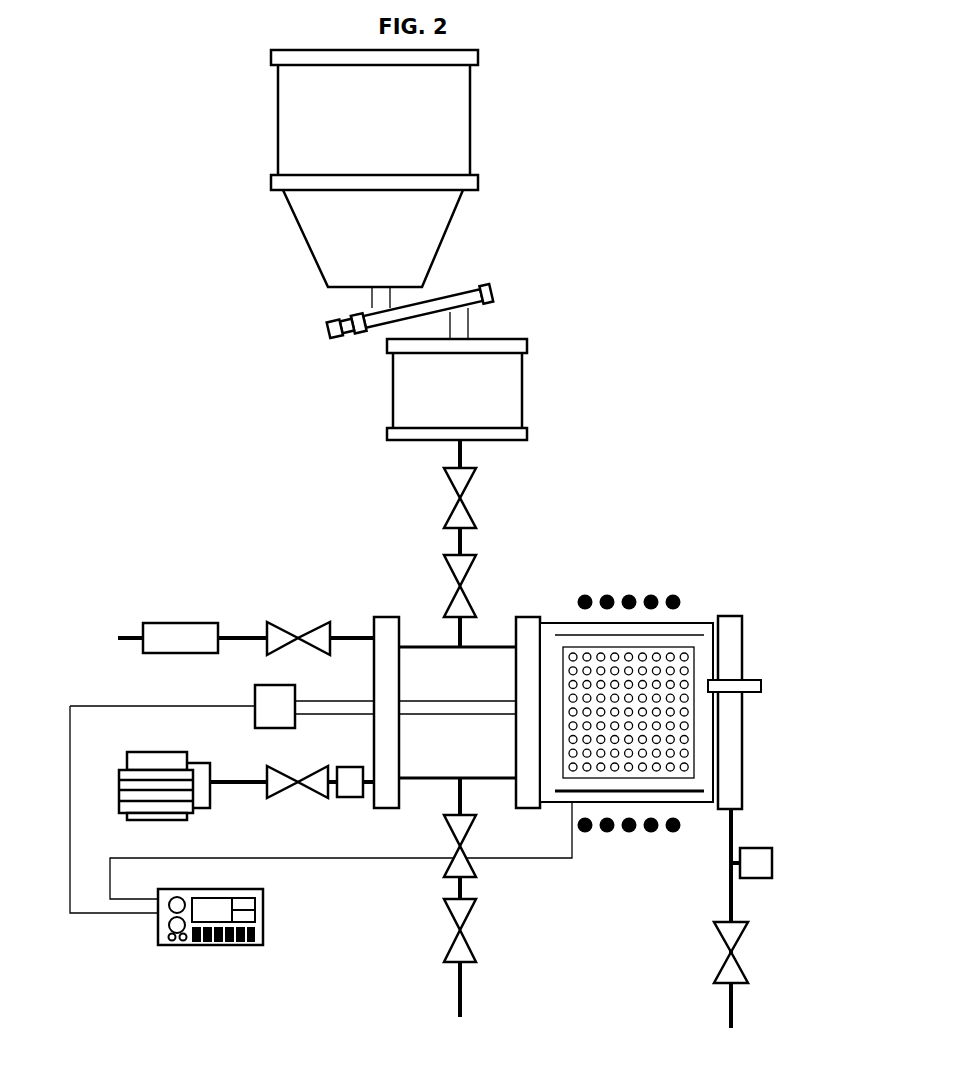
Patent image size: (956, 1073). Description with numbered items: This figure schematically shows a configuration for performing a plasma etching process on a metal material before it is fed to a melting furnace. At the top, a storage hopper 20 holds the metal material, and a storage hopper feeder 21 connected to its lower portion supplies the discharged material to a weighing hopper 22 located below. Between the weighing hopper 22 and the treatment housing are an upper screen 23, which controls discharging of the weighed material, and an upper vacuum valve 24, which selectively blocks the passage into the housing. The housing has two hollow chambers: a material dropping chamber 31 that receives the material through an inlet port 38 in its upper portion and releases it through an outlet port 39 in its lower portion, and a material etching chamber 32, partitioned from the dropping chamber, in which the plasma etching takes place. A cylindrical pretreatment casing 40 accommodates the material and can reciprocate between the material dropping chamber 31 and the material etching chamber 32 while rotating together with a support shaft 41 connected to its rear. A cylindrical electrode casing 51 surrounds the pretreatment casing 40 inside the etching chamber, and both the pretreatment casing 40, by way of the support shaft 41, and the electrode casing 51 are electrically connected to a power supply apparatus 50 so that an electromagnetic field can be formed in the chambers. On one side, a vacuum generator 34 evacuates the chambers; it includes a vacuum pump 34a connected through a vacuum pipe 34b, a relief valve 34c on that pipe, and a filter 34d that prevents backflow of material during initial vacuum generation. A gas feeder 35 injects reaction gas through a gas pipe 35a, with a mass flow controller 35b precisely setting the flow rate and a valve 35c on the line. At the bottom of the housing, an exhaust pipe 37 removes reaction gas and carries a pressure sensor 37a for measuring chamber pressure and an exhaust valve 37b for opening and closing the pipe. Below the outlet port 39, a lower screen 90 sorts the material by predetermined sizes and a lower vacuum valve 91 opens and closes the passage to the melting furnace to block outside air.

The storage hopper 20 is at (283, 123).
The storage hopper feeder 21 is at (492, 291).
The weighing hopper 22 is at (518, 387).
The upper screen 23 is at (472, 491).
The upper vacuum valve 24 is at (472, 574).
The material dropping chamber 31 is at (446, 745).
The material etching chamber 32 is at (709, 733).
The vacuum generator 34 is at (201, 786).
The vacuum pump 34a is at (192, 800).
The vacuum pipe 34b is at (239, 778).
The relief valve 34c is at (283, 785).
The filter 34d is at (352, 772).
The gas feeder 35 is at (204, 614).
The gas pipe 35a is at (247, 636).
The mass flow controller 35b is at (165, 628).
The valve 35c is at (310, 630).
The exhaust pipe 37 is at (742, 826).
The pressure sensor 37a is at (772, 863).
The exhaust valve 37b is at (738, 940).
The inlet port 38 is at (463, 641).
The outlet port 39 is at (464, 781).
The pretreatment casing 40 is at (692, 780).
The support shaft 41 is at (447, 703).
The power supply apparatus 50 is at (265, 910).
The cylindrical electrode casing 51 is at (615, 795).
The lower screen 90 is at (470, 825).
The lower vacuum valve 91 is at (467, 922).